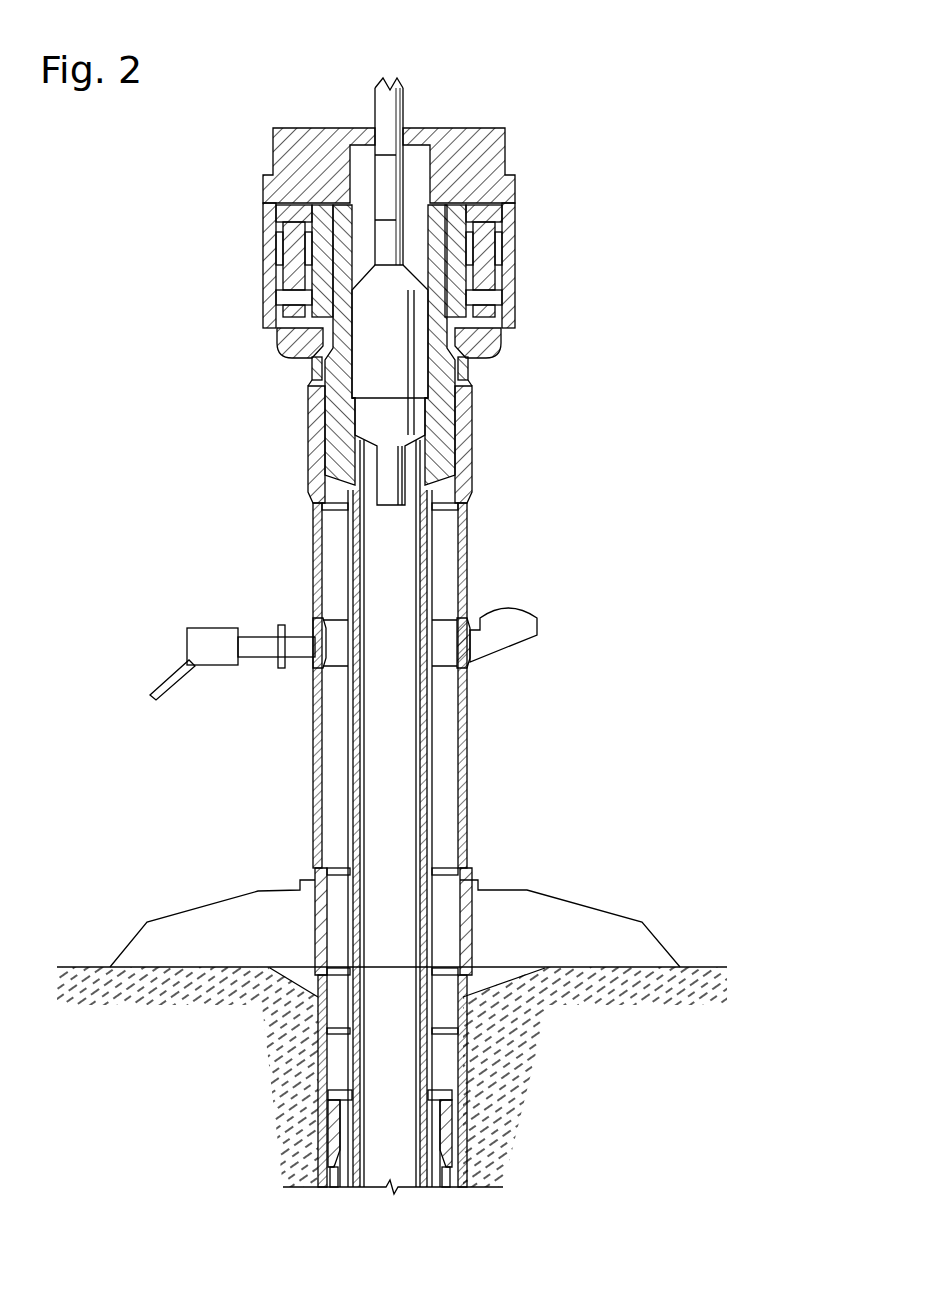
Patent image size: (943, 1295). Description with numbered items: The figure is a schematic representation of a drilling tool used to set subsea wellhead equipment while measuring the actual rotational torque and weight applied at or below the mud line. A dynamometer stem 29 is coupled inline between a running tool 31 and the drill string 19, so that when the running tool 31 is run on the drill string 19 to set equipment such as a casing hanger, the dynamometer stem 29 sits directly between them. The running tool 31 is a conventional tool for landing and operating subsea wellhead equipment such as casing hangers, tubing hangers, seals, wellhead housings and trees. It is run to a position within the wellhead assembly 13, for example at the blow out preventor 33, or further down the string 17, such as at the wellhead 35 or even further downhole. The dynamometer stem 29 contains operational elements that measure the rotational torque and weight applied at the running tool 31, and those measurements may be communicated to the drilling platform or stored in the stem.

The wellhead assembly 13 is at (556, 127).
The string 17 is at (315, 812).
The drill string 19 is at (403, 93).
The dynamometer stem 29 is at (373, 176).
The running tool 31 is at (370, 363).
The blow out preventor 33 is at (275, 262).
The wellhead 35 is at (195, 908).